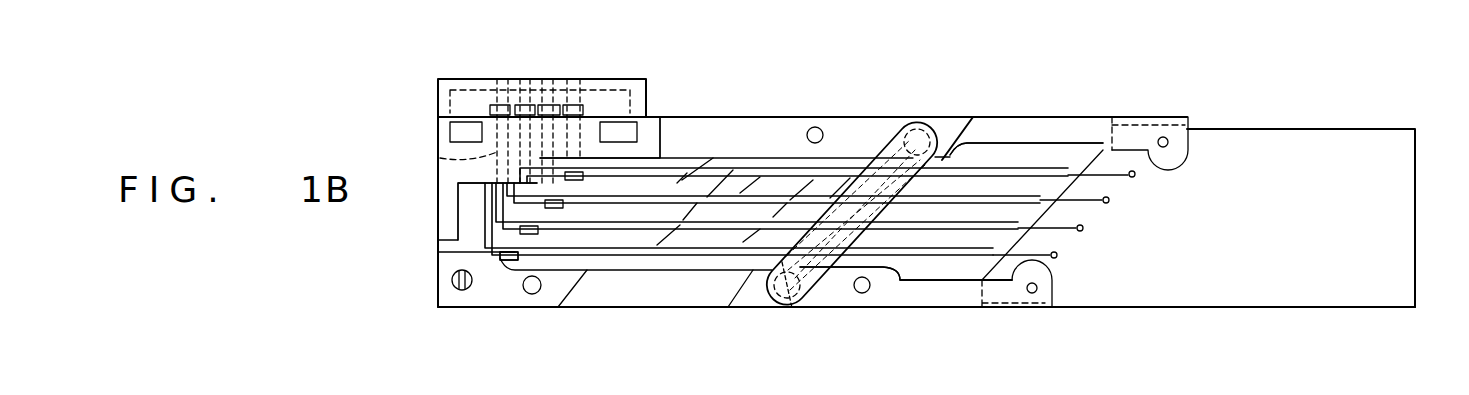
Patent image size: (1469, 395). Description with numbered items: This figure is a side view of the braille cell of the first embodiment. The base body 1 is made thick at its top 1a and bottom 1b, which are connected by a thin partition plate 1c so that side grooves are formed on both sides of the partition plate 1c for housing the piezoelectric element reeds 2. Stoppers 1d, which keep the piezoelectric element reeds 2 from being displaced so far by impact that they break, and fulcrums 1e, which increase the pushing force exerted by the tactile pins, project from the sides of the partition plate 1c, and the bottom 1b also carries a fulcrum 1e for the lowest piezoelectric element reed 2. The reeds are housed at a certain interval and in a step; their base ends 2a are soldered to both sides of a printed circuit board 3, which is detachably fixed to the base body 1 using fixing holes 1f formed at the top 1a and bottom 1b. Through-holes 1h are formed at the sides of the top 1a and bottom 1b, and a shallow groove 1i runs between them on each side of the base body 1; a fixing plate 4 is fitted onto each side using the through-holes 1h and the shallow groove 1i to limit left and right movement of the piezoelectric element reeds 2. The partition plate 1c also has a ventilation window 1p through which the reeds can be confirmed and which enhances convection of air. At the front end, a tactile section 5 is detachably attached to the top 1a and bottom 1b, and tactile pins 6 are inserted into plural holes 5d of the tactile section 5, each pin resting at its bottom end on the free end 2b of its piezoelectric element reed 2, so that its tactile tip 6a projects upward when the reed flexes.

The base body 1 is at (1066, 117).
The top of the base body 1a is at (772, 117).
The bottom of the base body 1b is at (670, 307).
The partition plate 1c is at (690, 117).
The stopper 1d is at (438, 255).
The fulcrum 1e is at (842, 290).
The fixing hole 1f is at (1163, 137).
The through-hole 1h is at (918, 130).
The shallow groove 1i is at (958, 117).
The ventilation window 1p is at (708, 290).
The piezoelectric element reed 2 is at (612, 300).
The base end of the piezoelectric element reed 2a is at (1085, 233).
The free end of the piezoelectric element reed 2b is at (494, 300).
The printed circuit board 3 is at (1342, 140).
The fixing plate 4 is at (850, 128).
The tactile section 5 is at (438, 112).
The hole of the tactile section 5d is at (440, 158).
The tactile pin 6 is at (458, 202).
The tactile tip of the tactile pin 6a is at (530, 79).